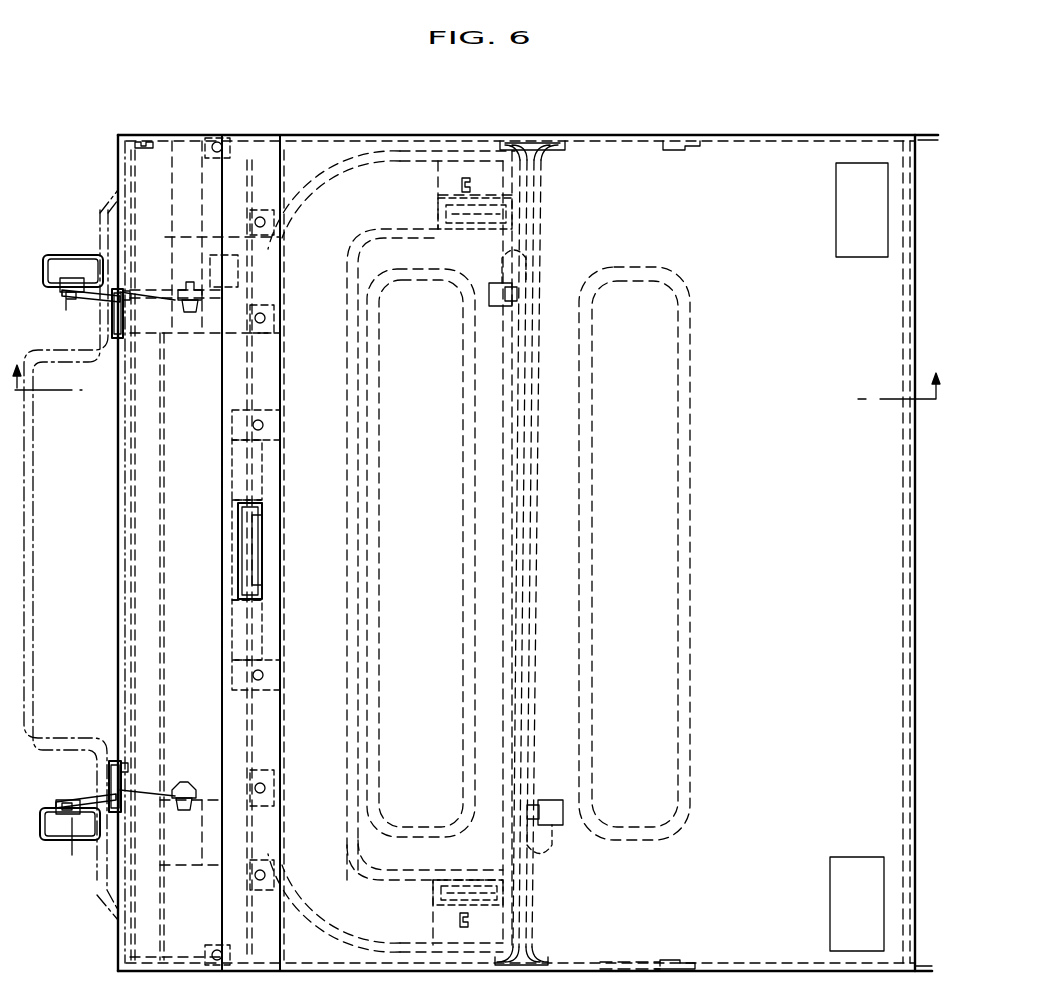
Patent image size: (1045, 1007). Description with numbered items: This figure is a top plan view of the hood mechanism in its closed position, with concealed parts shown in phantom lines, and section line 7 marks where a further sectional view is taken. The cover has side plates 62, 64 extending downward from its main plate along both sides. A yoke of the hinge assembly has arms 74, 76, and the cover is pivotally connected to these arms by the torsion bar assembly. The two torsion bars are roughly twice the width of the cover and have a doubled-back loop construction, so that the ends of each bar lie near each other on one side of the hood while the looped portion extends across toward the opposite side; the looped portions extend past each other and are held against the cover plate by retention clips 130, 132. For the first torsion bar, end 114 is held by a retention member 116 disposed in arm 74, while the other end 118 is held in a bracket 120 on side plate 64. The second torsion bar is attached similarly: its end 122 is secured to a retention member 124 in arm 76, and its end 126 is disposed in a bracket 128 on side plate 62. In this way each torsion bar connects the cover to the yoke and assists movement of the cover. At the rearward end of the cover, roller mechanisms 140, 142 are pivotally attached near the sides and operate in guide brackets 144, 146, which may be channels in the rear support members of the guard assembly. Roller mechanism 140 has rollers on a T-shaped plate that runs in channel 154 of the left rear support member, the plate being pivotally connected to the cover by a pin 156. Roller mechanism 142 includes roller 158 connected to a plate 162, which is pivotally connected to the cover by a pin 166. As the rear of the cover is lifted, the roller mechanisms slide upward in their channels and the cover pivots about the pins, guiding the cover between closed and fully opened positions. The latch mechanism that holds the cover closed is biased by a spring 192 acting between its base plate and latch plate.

The section line 7- 7 is at (475, 398).
The side plate 62 is at (917, 967).
The side plate 64 is at (920, 142).
The arm 74 is at (350, 175).
The arm 76 is at (372, 918).
The end of torsion bar 114 is at (465, 230).
The retention member 116 is at (465, 148).
The end of torsion bar 118 is at (598, 150).
The bracket 120 is at (683, 150).
The end of torsion bar 122 is at (470, 880).
The retention member 124 is at (490, 925).
The end of torsion bar 126 is at (612, 960).
The bracket 128 is at (672, 957).
The retention clip 130 is at (563, 825).
The retention clip 132 is at (491, 296).
The roller mechanism 140 is at (72, 306).
The roller mechanism 142 is at (72, 790).
The guide bracket 144 is at (73, 255).
The guide bracket 146 is at (50, 840).
The channel 154 is at (74, 985).
The pin 156 is at (190, 314).
The roller 158 is at (73, 842).
The plate 162 is at (86, 798).
The pin 166 is at (186, 782).
The spring 192 is at (246, 538).